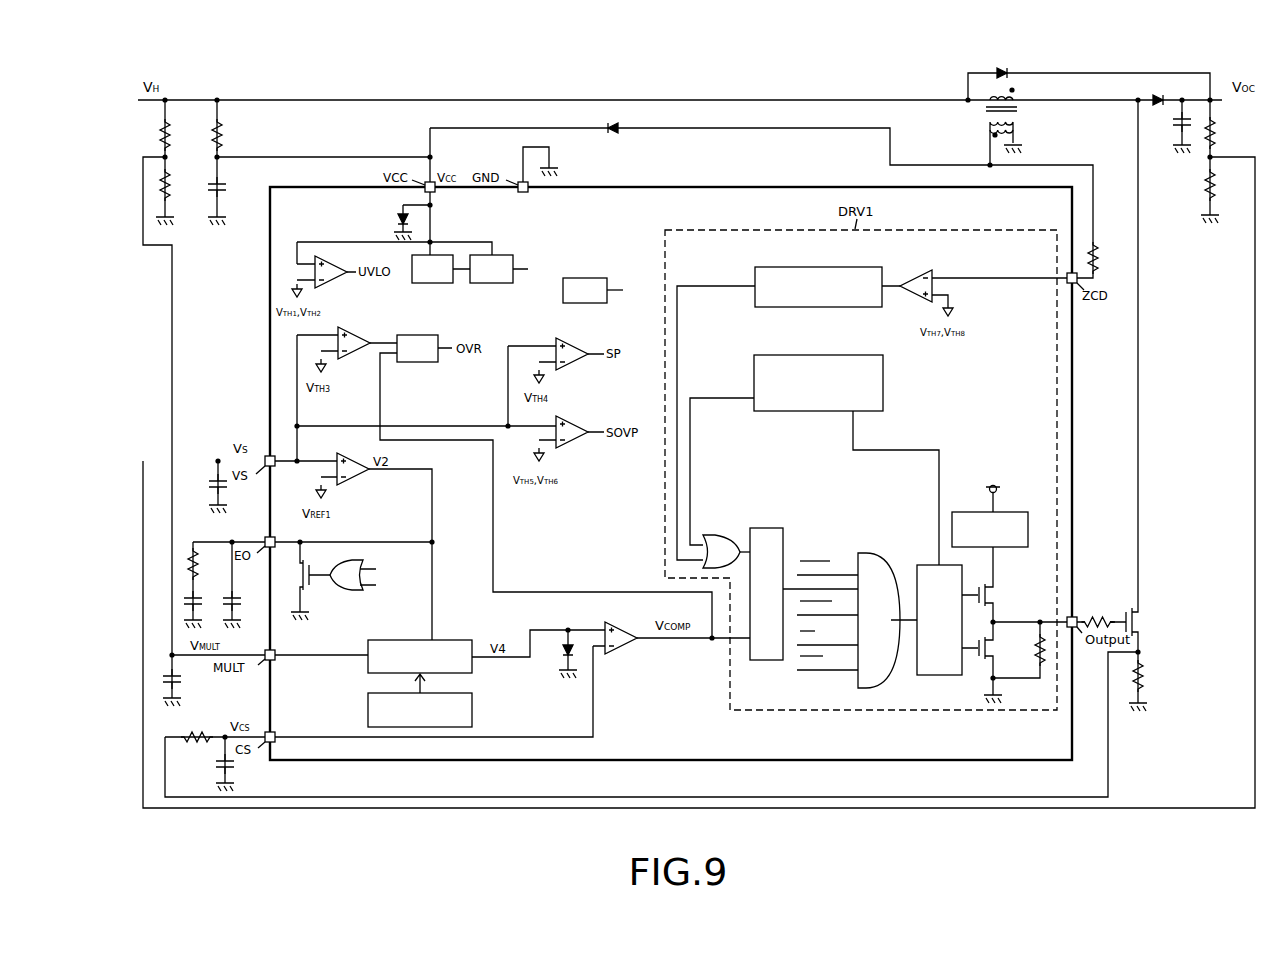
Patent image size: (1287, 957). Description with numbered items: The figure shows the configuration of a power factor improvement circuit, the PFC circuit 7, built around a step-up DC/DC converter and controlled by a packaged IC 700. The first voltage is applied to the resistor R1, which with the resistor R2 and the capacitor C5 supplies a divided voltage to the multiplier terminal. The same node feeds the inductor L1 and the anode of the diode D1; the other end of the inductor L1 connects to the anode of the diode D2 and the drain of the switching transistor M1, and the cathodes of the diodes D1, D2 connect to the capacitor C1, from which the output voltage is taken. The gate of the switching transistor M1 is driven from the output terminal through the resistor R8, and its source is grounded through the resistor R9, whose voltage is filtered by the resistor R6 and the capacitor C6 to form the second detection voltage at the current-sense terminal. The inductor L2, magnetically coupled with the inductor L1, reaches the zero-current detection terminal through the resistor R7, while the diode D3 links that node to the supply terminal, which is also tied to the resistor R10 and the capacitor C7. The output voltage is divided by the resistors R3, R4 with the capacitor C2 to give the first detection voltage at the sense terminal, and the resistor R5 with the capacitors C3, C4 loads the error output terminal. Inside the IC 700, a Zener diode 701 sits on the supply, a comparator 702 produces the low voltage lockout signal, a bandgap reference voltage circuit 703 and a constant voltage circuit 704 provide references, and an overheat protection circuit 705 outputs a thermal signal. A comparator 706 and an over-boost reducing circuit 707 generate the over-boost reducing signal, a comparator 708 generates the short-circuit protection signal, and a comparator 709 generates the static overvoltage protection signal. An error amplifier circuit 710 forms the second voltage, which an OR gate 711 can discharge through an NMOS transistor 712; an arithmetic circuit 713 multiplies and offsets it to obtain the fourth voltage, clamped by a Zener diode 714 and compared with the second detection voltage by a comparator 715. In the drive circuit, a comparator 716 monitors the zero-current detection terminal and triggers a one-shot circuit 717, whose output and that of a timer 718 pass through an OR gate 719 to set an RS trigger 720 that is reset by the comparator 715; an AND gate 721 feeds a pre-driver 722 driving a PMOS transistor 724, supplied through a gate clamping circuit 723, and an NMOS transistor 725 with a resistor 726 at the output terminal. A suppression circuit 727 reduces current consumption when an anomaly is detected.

The PFC circuit 7 is at (522, 64).
The IC 700 is at (746, 186).
The Zener diode 701 is at (397, 221).
The comparator 702 is at (338, 284).
The bandgap reference voltage circuit 703 is at (432, 284).
The constant voltage circuit 704 is at (491, 284).
The overheat protection circuit 705 is at (585, 277).
The comparator 706 is at (360, 336).
The over-boost reducing circuit 707 is at (418, 334).
The comparator 708 is at (572, 342).
The comparator 709 is at (572, 422).
The error amplifier circuit 710 is at (352, 455).
The OR gate 711 is at (353, 592).
The NMOS transistor 712 is at (316, 565).
The arithmetic circuit 713 is at (458, 639).
The Zener diode 714 is at (561, 655).
The comparator 715 is at (617, 624).
The comparator 716 is at (920, 275).
The one-shot circuit 717 is at (820, 266).
The timer 718 is at (820, 354).
The OR gate 719 is at (722, 535).
The RS trigger 720 is at (767, 527).
The AND gate 721 is at (866, 552).
The pre-driver 722 is at (938, 676).
The gate clamping circuit 723 is at (999, 492).
The PMOS transistor 724 is at (995, 597).
The NMOS transistor 725 is at (996, 649).
The resistor 726 is at (1034, 655).
The suppression circuit 727 is at (473, 702).
The resistor R1 is at (172, 132).
The resistor R2 is at (172, 182).
The resistor R3 is at (1218, 135).
The resistor R4 is at (1218, 185).
The resistor R5 is at (200, 562).
The resistor R6 is at (202, 730).
The resistor R7 is at (1099, 258).
The resistor R8 is at (1100, 613).
The resistor R9 is at (1146, 670).
The resistor R10 is at (224, 132).
The capacitor C1 is at (1173, 126).
The capacitor C2 is at (208, 487).
The capacitor C3 is at (238, 596).
The capacitor C4 is at (200, 596).
The capacitor C5 is at (168, 668).
The capacitor C6 is at (213, 766).
The capacitor C7 is at (228, 183).
The diode D1 is at (1002, 68).
The diode D2 is at (1163, 96).
The diode D3 is at (613, 134).
The inductor L1 is at (1016, 95).
The inductor L2 is at (1016, 128).
The switching transistor M1 is at (1143, 620).